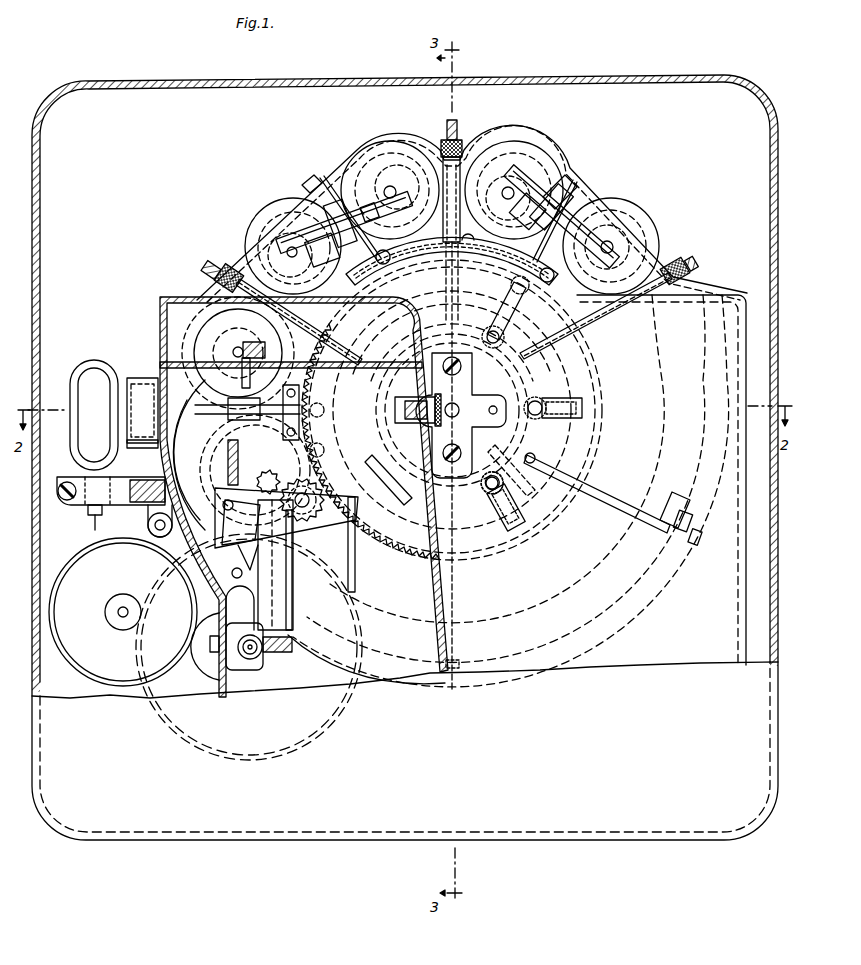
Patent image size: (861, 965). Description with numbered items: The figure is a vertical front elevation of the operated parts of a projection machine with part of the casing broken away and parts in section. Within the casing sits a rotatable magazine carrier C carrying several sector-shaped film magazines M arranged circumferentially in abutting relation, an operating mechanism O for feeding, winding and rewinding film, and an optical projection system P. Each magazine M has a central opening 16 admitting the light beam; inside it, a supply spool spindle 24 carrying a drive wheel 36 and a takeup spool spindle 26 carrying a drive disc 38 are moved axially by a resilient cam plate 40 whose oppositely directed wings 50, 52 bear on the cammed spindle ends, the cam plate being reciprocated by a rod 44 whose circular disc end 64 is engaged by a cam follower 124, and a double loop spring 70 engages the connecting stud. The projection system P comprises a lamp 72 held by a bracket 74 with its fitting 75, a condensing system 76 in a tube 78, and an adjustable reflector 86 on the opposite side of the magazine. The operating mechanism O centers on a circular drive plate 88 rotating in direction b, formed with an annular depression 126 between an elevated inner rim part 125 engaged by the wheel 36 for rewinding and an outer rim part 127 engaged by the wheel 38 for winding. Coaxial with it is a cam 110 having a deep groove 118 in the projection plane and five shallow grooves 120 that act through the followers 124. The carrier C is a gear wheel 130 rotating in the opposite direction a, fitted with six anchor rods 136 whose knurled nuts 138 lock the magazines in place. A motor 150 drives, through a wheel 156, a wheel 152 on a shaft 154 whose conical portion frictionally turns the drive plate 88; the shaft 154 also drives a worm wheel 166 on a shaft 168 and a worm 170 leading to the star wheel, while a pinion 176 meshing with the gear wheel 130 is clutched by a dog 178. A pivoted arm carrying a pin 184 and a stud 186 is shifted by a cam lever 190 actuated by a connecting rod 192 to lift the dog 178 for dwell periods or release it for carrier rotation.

The orifice or opening 16 is at (250, 402).
The spool spindle 24 is at (672, 236).
The spool spindle 26 is at (399, 226).
The drive wheel or disc 36 is at (390, 173).
The drive disc or wheel 38 is at (270, 200).
The resilient cam plate 40 is at (461, 217).
The rod 44 is at (580, 180).
The cam wing 50 is at (398, 212).
The cam wing 52 is at (332, 244).
The circular disc end 64 is at (522, 300).
The double loop spring 70 is at (474, 246).
The source of illumination 72 is at (92, 368).
The bracket 74 is at (145, 480).
The screw 75 is at (85, 508).
The condensing system 76 is at (142, 378).
The tube 78 is at (138, 453).
The adjustable reflector 86 is at (438, 426).
The circular drive plate 88 is at (300, 182).
The cam 110 is at (530, 395).
The deep groove 118 is at (412, 420).
The shallow grooves 120 is at (493, 350).
The cam follower 124 is at (552, 404).
The rim part of the plate 125 is at (673, 339).
The annular depression 126 is at (680, 300).
The rim part of the plate 127 is at (700, 312).
The gear wheel 130 is at (430, 560).
The anchor rods 136 is at (642, 514).
The knurled nuts 138 is at (693, 535).
The motor 150 is at (76, 652).
The wheel 152 is at (148, 688).
The shaft 154 is at (258, 665).
The wheel 156 is at (122, 594).
The worm wheel 166 is at (283, 652).
The shaft 168 is at (294, 605).
The worm 170 is at (290, 530).
The pinion 176 is at (300, 520).
The dog or ratchet 178 is at (302, 486).
The pin 184 is at (268, 482).
The stud 186 is at (232, 480).
The cam lever 190 is at (396, 490).
The connecting rod 192 is at (355, 580).
The rotatable magazine carrier C is at (462, 148).
The film magazine M is at (396, 122).
The operating mechanism O is at (310, 163).
The optical projection system P is at (124, 361).
The arrow a is at (585, 398).
The arrow b is at (222, 243).